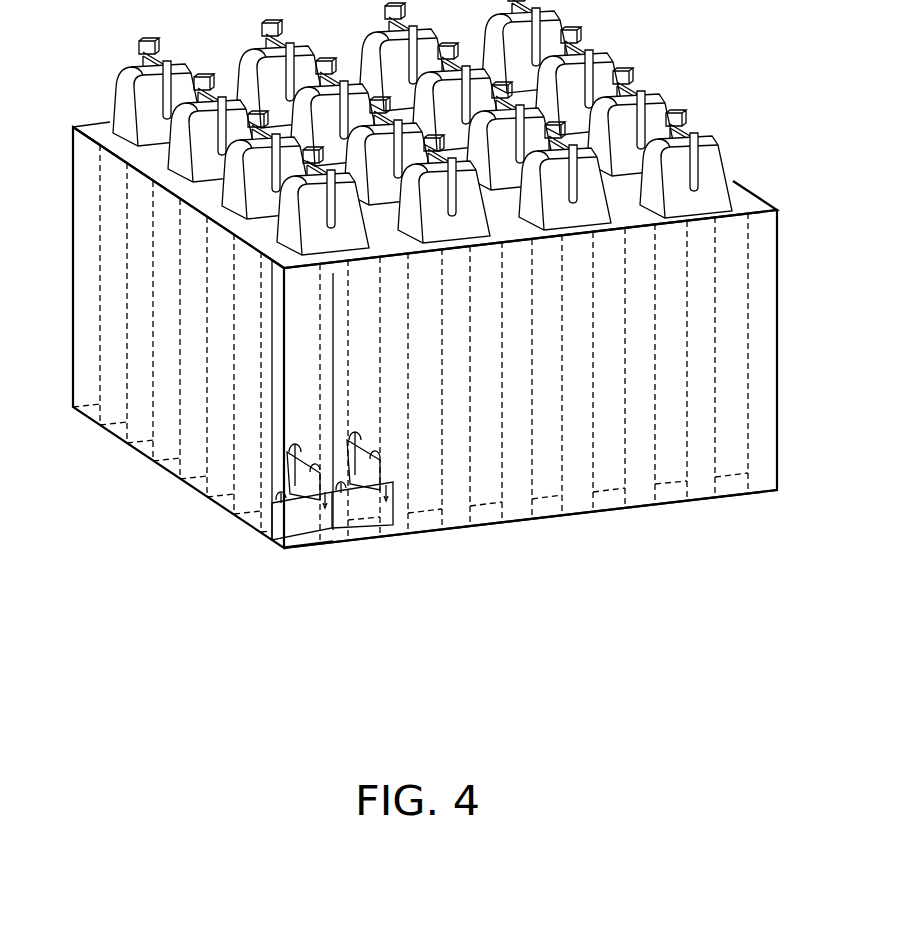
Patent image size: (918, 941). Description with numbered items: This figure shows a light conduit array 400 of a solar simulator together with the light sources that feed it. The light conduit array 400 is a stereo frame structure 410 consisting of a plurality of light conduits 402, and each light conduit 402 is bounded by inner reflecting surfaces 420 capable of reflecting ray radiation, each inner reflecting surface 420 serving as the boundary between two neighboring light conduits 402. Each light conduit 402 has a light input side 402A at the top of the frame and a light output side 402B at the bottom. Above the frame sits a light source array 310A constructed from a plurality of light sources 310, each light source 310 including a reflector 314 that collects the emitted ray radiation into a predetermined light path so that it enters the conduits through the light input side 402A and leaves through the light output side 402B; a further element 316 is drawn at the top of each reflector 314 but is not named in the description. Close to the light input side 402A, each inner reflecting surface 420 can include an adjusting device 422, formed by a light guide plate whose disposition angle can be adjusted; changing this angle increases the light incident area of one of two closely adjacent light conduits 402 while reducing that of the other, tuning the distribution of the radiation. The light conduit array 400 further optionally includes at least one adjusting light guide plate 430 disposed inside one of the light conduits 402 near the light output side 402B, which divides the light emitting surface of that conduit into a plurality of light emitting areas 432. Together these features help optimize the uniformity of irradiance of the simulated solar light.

The light source 310 is at (717, 156).
The reflector 314 is at (724, 148).
The tab head 316 is at (710, 120).
The light source array 310A is at (788, 15).
The light conduit array 400 is at (828, 623).
The light conduit 402 is at (737, 167).
The light input side 402A is at (779, 210).
The light output side 402B is at (777, 491).
The stereo frame structure 410 is at (777, 294).
The inner reflecting surface 420 is at (627, 200).
The adjusting device 422 is at (247, 212).
The adjusting light guide plate 430 is at (320, 524).
The light emitting area 432 is at (297, 543).